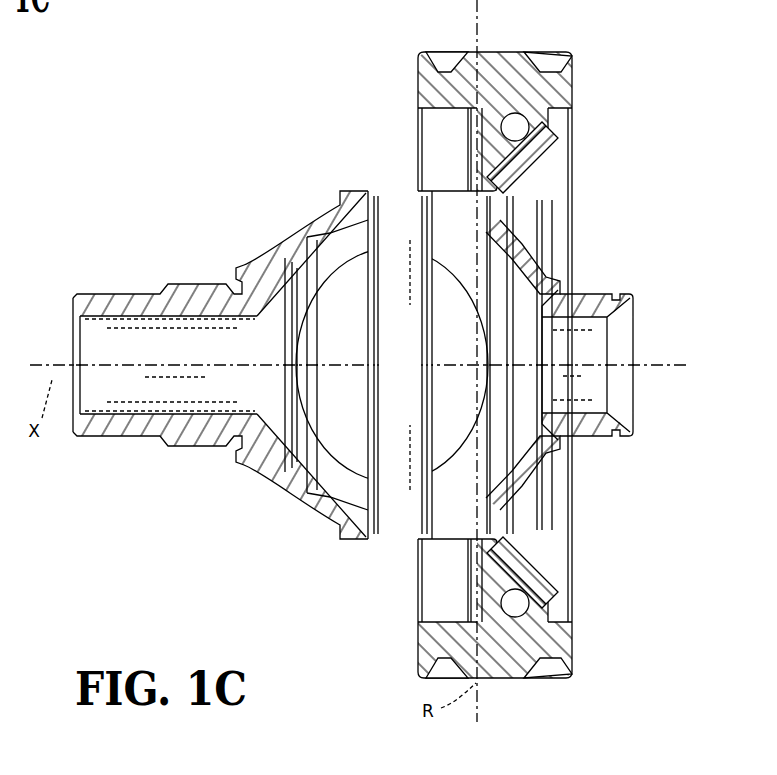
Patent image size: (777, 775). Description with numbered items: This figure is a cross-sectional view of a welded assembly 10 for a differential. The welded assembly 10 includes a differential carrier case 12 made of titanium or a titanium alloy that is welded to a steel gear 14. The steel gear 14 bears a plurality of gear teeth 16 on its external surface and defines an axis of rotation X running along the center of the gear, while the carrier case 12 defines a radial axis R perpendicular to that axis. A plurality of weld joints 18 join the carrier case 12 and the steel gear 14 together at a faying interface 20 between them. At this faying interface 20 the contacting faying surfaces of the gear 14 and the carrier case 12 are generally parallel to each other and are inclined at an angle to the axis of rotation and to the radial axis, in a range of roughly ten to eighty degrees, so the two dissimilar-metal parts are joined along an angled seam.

The welded assembly 10 is at (104, 178).
The differential carrier case 12 is at (347, 532).
The steel gear 14 is at (455, 92).
The gear teeth 16 is at (470, 65).
The weld joints 18 is at (522, 160).
The faying interface 20 is at (505, 147).